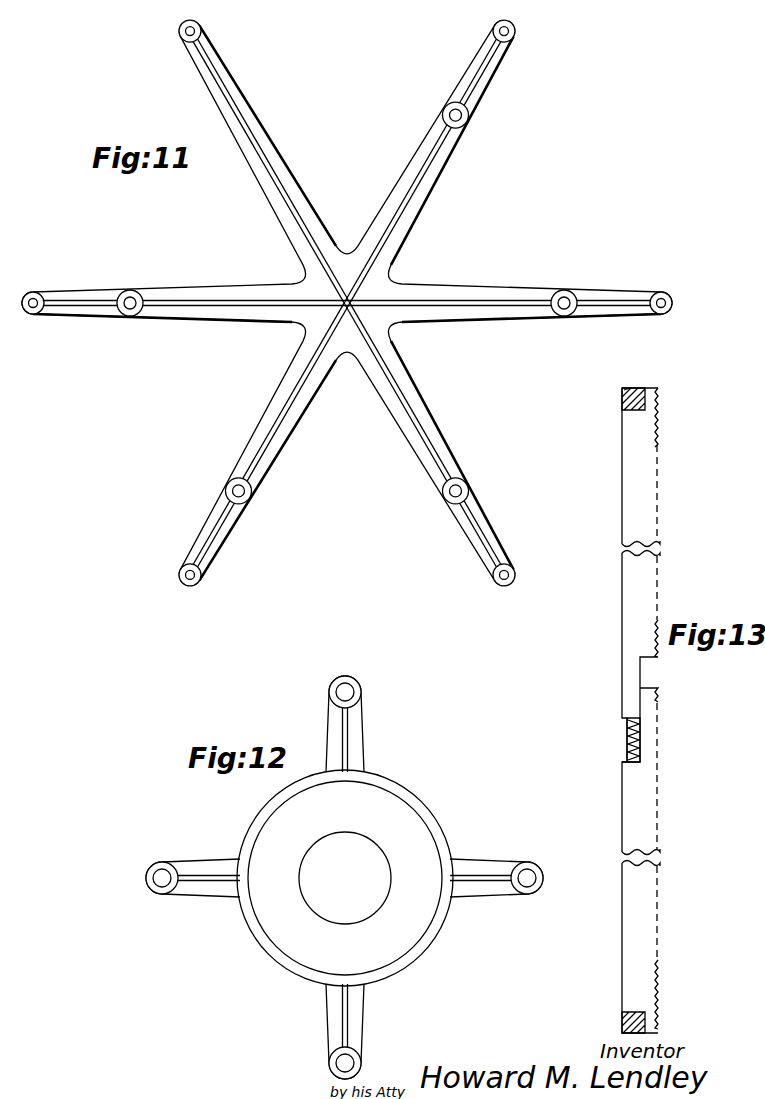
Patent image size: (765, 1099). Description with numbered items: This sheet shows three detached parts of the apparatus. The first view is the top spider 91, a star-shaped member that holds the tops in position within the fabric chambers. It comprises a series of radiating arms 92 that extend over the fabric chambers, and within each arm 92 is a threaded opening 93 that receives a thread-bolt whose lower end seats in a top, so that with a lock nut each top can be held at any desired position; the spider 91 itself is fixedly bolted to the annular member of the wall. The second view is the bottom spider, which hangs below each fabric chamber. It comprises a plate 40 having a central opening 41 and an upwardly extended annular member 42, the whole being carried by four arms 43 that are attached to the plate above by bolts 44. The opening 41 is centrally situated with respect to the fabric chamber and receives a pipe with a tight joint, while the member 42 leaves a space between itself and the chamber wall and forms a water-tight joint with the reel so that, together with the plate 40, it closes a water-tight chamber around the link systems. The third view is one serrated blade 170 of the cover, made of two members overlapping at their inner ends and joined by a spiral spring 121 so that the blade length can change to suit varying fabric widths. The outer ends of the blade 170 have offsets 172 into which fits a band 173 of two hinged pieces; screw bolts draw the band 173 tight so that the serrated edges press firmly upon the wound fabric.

In FIG. 11, the top spider 91 is at (352, 300).
In FIG. 11, the arm 92 is at (281, 223).
In FIG. 11, the threaded opening 93 is at (131, 297).
In FIG. 12, the plate 40 is at (403, 949).
In FIG. 12, the central opening 41 is at (381, 866).
In FIG. 12, the annular member 42 is at (433, 940).
In FIG. 12, the arm 43 is at (366, 735).
In FIG. 12, the bolt 44 is at (162, 882).
In FIG. 13, the serrated blade 170 is at (627, 566).
In FIG. 13, the spring 121 is at (622, 748).
In FIG. 13, the offset 172 is at (640, 390).
In FIG. 13, the band 173 is at (622, 400).